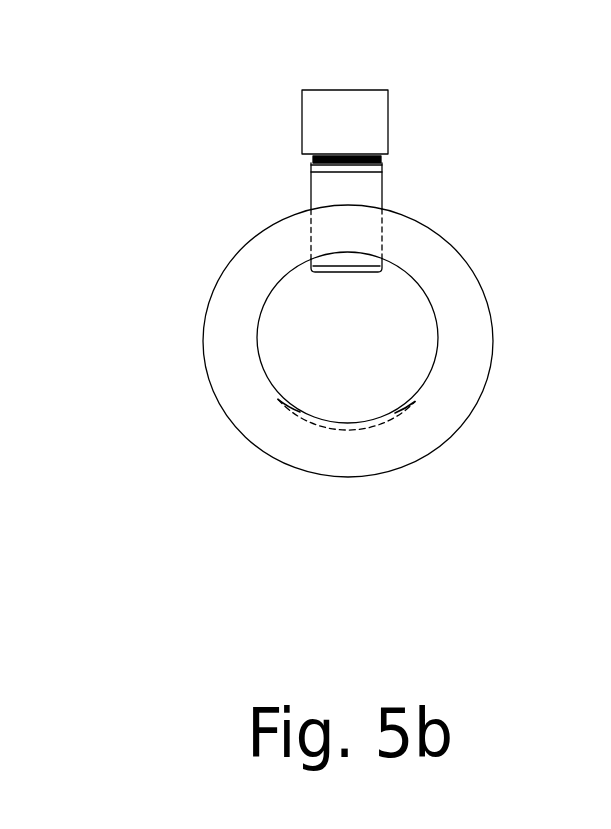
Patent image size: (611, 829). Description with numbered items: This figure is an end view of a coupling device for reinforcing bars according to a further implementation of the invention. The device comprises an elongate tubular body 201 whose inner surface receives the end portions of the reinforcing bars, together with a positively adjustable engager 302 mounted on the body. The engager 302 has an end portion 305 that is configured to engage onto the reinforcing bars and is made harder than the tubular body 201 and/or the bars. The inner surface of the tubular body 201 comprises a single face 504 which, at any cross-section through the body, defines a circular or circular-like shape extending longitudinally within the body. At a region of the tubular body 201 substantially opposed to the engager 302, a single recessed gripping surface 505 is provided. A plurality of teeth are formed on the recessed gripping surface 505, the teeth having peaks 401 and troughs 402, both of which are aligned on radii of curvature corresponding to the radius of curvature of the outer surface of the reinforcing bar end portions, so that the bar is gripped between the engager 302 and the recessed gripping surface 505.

The positively adjustable engager 302 is at (404, 80).
The end portion 305 is at (357, 267).
The elongate tubular body 201 is at (440, 258).
The single face 504 is at (433, 300).
The recessed gripping surface 505 is at (402, 434).
The troughs 402 is at (297, 418).
The peaks 401 is at (407, 413).